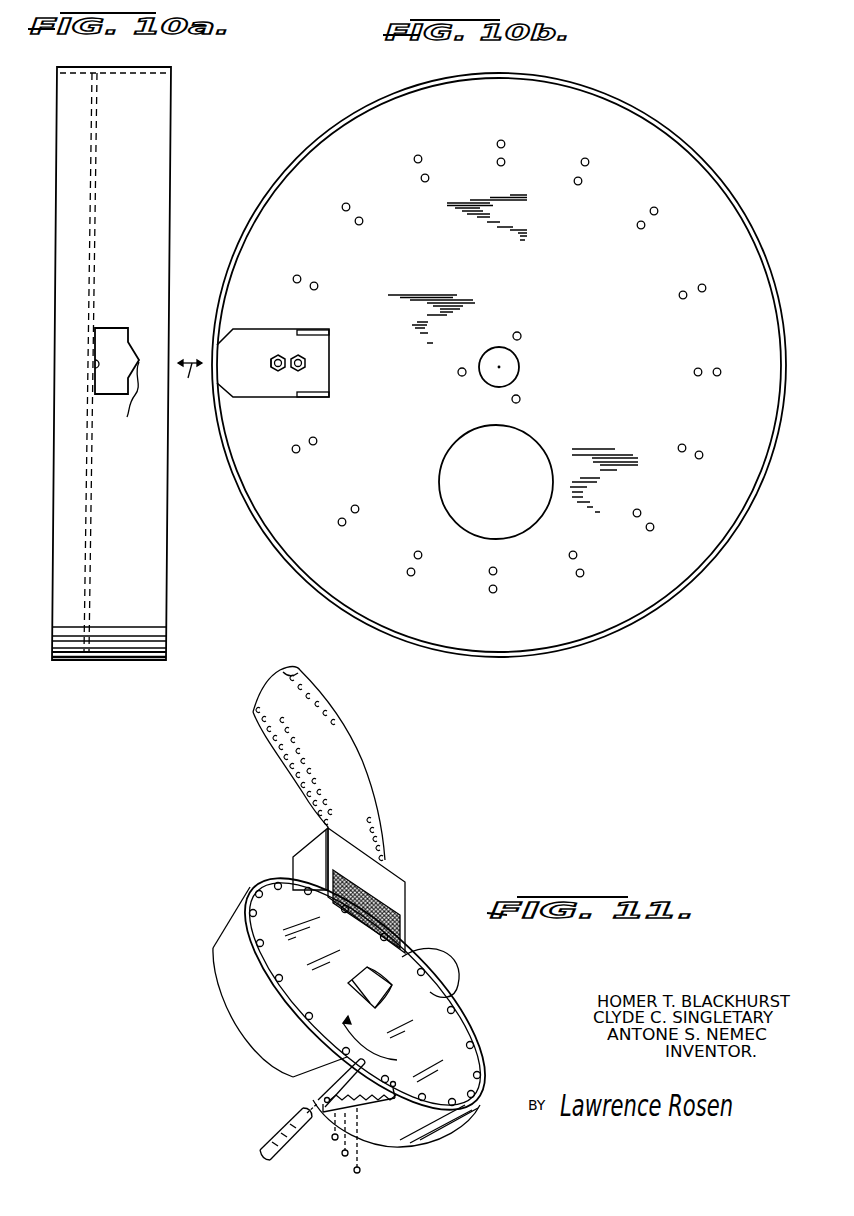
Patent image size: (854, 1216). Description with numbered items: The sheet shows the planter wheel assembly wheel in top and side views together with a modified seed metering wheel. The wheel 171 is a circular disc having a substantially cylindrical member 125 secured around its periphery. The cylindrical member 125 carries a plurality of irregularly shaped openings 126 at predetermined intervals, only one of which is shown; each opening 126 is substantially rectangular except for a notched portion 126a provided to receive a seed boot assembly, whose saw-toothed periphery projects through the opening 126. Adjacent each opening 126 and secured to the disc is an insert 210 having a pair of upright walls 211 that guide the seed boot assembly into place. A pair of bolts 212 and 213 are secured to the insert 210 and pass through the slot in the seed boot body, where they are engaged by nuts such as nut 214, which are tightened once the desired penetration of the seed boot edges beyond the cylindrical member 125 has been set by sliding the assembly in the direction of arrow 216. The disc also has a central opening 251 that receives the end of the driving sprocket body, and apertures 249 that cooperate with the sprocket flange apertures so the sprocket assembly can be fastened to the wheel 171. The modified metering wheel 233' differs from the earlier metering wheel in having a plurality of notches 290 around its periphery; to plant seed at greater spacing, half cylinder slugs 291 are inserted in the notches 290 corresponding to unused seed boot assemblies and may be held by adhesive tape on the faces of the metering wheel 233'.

In FIG. 10A, the cylindrical member 125 is at (172, 140).
In FIG. 10B, the cylindrical member 125 is at (663, 125).
In FIG. 10A, the opening 126 is at (97, 366).
In FIG. 10A, the notched portion 126a is at (122, 403).
In FIG. 10A, the wheel 171 is at (92, 547).
In FIG. 10B, the wheel 171 is at (630, 300).
In FIG. 10A, the arrow 216 is at (193, 381).
In FIG. 10B, the insert 210 is at (270, 389).
In FIG. 10B, the walls 211 is at (313, 330).
In FIG. 10B, the bolt 212 is at (278, 355).
In FIG. 10B, the bolt 213 is at (304, 357).
In FIG. 10B, the nut 214 is at (271, 365).
In FIG. 10B, the apertures 249 is at (522, 334).
In FIG. 10B, the opening 251 is at (514, 372).
In FIG. 11, the modified metering wheel 233' is at (384, 890).
In FIG. 11, the notches 290 is at (405, 955).
In FIG. 11, the half cylinder slug 291 is at (282, 1127).